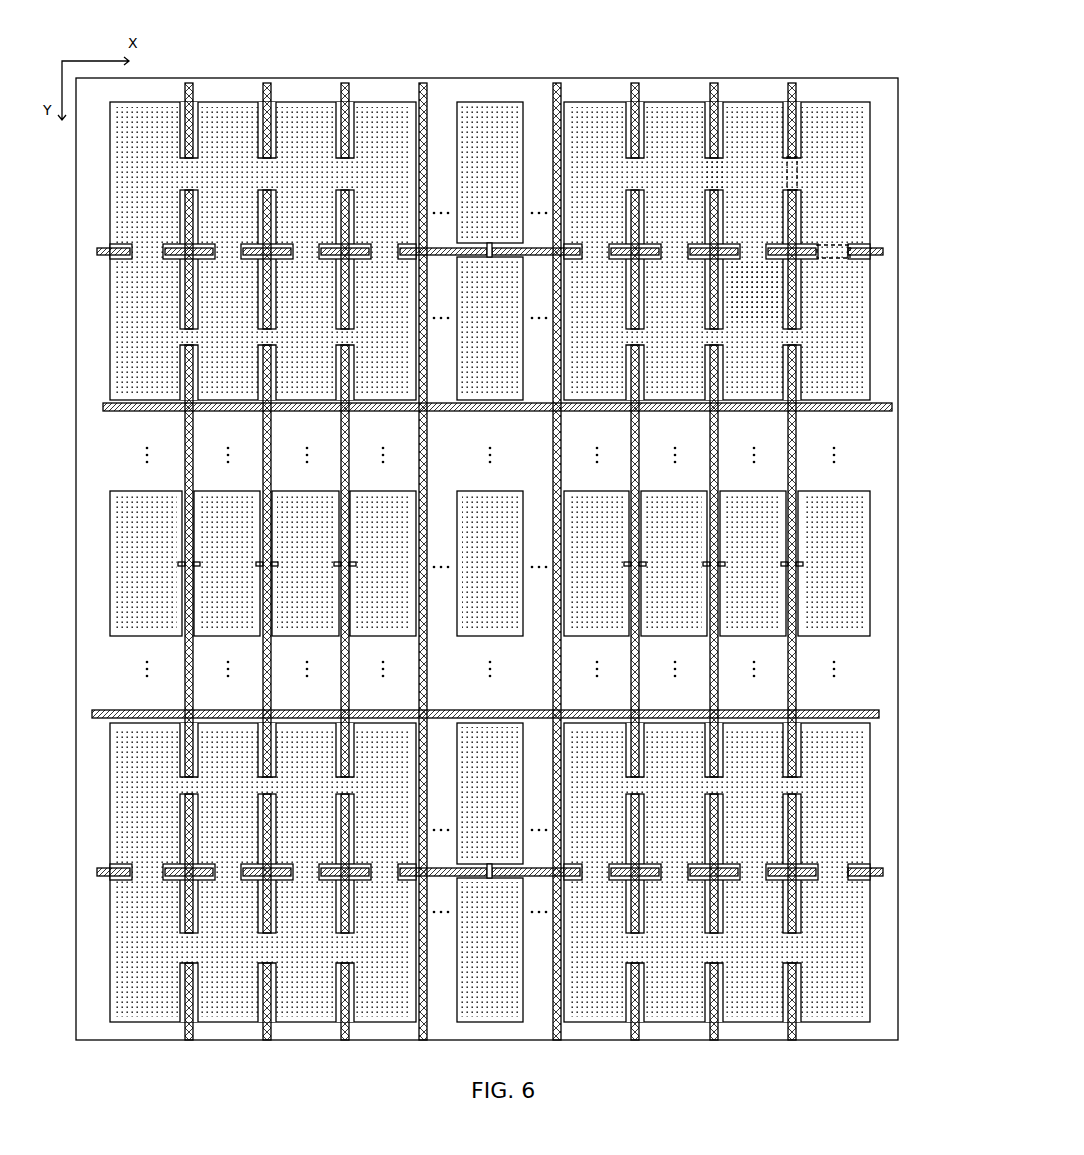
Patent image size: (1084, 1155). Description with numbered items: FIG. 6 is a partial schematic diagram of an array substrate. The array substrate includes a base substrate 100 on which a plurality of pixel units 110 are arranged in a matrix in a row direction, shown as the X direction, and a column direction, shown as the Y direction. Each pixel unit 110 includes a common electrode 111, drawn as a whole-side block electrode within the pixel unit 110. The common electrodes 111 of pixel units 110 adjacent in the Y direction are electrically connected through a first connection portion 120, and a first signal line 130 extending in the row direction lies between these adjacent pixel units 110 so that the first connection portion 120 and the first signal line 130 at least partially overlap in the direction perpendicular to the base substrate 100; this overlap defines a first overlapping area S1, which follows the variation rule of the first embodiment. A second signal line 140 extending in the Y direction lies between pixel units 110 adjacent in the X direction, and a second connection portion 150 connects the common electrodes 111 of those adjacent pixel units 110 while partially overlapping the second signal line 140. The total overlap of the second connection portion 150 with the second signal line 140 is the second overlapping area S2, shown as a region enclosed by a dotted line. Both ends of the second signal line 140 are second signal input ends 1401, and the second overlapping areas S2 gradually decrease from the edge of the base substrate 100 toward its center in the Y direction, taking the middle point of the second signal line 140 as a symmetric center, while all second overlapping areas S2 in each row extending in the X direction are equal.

The base substrate 100 is at (880, 95).
The pixel unit 110 is at (870, 128).
The common electrode 111 is at (860, 142).
The first connection portion 120 is at (758, 258).
The first signal line 130 is at (883, 248).
The second signal line 140 is at (815, 258).
The second signal input end 1401 is at (793, 83).
The second connection portion 150 is at (713, 167).
The first overlapping area S1 is at (838, 245).
The second overlapping area S2 is at (797, 168).